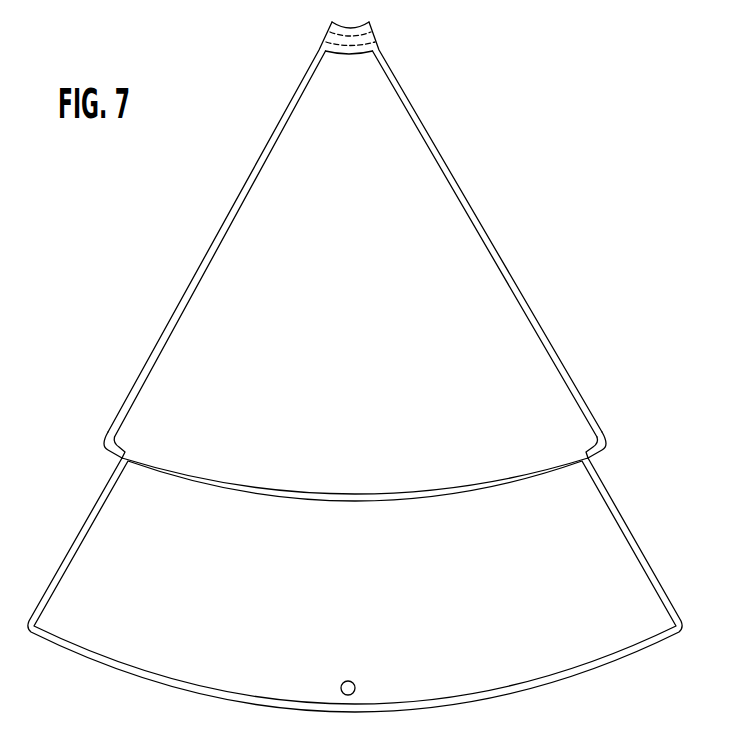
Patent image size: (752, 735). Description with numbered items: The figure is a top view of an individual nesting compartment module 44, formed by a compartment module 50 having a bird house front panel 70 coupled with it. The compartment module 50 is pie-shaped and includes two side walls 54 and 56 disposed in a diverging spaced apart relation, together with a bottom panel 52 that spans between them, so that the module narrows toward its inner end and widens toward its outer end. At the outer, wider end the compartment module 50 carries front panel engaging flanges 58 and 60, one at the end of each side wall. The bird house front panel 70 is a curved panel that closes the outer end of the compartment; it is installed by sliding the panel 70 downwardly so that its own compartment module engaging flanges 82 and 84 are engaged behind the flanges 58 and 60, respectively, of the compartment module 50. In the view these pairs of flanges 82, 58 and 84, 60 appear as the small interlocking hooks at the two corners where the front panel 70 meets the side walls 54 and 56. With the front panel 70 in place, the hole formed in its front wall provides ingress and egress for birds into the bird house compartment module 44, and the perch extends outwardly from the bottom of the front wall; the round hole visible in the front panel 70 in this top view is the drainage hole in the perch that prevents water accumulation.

The nesting compartment module 44 is at (611, 221).
The compartment module 50 is at (542, 318).
The bottom panel 52 is at (362, 360).
The side wall 54 is at (578, 383).
The side wall 56 is at (163, 331).
The front panel engaging flange 58 is at (602, 456).
The front panel engaging flange 60 is at (108, 456).
The bird house front panel 70 is at (661, 646).
The compartment module engaging flange 82 is at (587, 447).
The compartment module engaging flange 84 is at (123, 447).